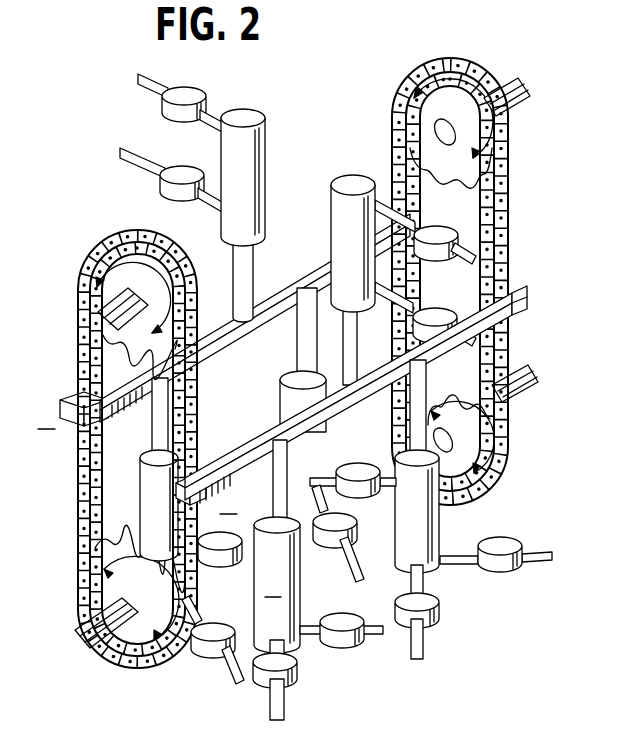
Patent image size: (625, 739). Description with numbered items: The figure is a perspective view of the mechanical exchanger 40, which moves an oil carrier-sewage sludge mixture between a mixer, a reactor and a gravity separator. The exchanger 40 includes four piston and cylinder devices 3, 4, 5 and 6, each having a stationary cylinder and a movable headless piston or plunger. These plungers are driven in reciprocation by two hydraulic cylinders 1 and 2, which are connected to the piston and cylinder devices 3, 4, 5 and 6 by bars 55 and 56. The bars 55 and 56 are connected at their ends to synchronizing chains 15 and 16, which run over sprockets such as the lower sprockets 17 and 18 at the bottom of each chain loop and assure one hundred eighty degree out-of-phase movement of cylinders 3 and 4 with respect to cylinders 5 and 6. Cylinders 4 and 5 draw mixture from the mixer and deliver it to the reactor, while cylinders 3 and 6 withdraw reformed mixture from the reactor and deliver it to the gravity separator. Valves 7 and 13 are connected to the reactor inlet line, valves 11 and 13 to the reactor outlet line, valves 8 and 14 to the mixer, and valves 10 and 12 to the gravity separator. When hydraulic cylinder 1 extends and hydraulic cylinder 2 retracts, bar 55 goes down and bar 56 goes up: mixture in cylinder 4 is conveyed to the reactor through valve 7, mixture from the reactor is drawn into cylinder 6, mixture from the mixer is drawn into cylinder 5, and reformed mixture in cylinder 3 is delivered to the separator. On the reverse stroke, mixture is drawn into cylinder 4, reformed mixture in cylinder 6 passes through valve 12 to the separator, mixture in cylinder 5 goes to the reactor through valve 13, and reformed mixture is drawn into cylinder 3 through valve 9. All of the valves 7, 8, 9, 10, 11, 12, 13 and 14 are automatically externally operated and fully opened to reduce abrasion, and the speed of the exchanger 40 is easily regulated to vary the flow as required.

The hydraulic cylinder 1 is at (263, 111).
The hydraulic cylinder 2 is at (356, 179).
The piston and cylinder device 3 is at (138, 492).
The piston and cylinder device 4 is at (288, 399).
The piston and cylinder device 5 is at (277, 546).
The piston and cylinder device 6 is at (440, 525).
The valve 7 is at (382, 447).
The valve 8 is at (356, 522).
The valve 9 is at (219, 563).
The valve 10 is at (212, 660).
The valve 11 is at (512, 545).
The valve 12 is at (433, 596).
The valve 13 is at (348, 612).
The valve 14 is at (293, 665).
The synchronizing chain 15 is at (505, 188).
The synchronizing chain 16 is at (193, 398).
The right lower sprocket 17 is at (495, 499).
The left lower sprocket 18 is at (128, 650).
The mechanical exchanger 40 is at (351, 105).
The bar 55 is at (214, 322).
The bar 56 is at (337, 408).